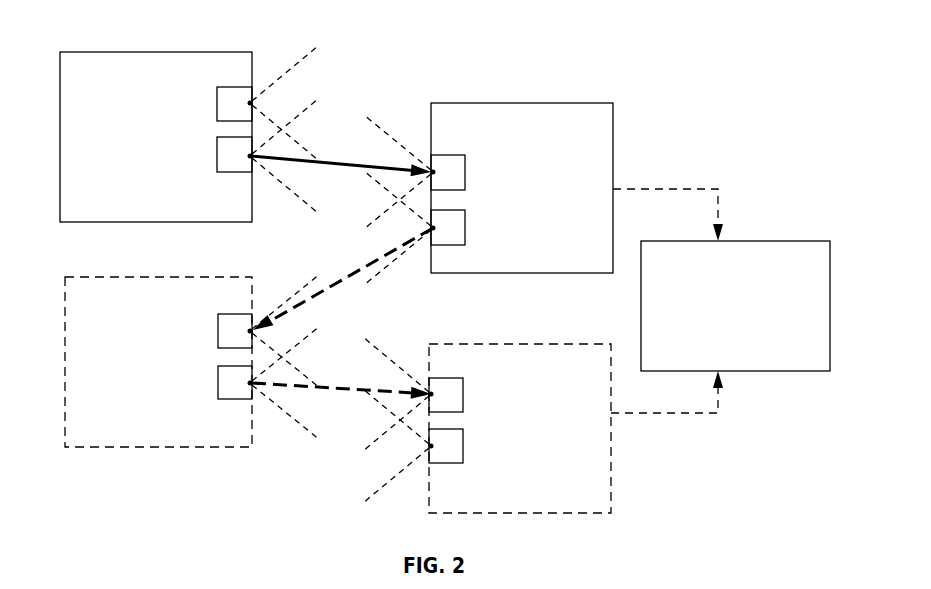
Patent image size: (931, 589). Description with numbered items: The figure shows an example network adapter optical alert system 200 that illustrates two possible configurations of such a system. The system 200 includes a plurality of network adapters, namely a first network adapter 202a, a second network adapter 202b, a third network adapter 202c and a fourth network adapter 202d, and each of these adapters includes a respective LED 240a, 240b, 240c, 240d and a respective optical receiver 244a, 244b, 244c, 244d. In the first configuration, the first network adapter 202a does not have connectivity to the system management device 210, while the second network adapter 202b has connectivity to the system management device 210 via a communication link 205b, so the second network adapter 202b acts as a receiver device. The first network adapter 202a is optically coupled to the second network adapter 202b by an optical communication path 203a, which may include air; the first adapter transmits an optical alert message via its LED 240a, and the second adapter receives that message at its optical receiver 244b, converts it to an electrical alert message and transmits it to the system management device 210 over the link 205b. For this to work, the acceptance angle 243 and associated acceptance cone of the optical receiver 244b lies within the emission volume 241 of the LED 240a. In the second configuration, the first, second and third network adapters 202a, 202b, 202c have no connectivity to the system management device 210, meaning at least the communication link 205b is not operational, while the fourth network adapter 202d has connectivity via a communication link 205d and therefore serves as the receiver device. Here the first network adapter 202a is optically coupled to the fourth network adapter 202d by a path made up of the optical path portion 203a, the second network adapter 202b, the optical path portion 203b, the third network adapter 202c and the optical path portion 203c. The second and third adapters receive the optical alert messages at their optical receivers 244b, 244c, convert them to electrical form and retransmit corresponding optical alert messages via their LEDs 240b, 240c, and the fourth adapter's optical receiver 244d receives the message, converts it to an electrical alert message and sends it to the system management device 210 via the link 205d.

The network adapter optical alert system 200 is at (22, 36).
The first network adapter 202a is at (110, 126).
The second network adapter 202b is at (531, 192).
The third network adapter 202c is at (129, 357).
The fourth network adapter 202d is at (524, 427).
The optical communication path 203a is at (332, 162).
The optical path portion 203b is at (368, 262).
The optical path portion 203c is at (325, 387).
The communication link 205b is at (643, 193).
The communication link 205d is at (637, 413).
The system management device 210 is at (718, 359).
The LED 240a is at (217, 142).
The LED 240b is at (465, 220).
The LED 240c is at (218, 371).
The LED 240d is at (463, 440).
The emission volume 241 is at (300, 115).
The acceptance angle 243 is at (375, 128).
The optical receiver 244a is at (217, 100).
The optical receiver 244b is at (465, 170).
The optical receiver 244c is at (218, 327).
The optical receiver 244d is at (463, 395).